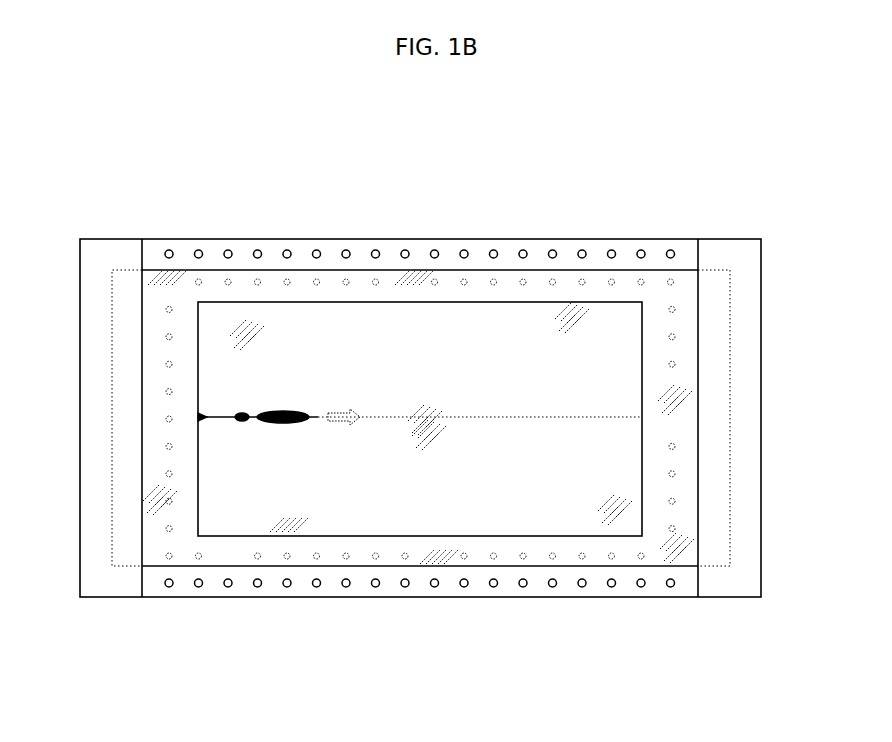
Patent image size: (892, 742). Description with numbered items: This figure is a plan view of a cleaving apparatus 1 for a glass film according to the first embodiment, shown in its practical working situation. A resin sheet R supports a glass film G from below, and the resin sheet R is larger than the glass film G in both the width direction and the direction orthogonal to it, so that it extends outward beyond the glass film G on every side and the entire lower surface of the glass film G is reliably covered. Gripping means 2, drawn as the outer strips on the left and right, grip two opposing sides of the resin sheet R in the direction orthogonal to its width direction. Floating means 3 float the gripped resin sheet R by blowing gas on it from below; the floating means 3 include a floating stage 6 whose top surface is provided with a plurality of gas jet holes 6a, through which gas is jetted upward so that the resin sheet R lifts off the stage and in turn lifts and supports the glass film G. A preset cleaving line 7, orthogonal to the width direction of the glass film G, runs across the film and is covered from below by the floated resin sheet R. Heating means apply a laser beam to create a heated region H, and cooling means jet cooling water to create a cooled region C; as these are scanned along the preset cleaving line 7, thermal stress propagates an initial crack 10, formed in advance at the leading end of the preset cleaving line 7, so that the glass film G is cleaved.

The cleaving apparatus 1 is at (553, 196).
The gripping means 2 is at (118, 246).
The floating means 3 is at (386, 605).
The floating stage 6 is at (622, 251).
The gas jet holes 6a is at (478, 276).
The preset cleaving line 7 is at (485, 418).
The resin sheet R is at (208, 285).
The glass film G is at (300, 315).
The cooled region C is at (242, 412).
The heated region H is at (288, 411).
The initial crack 10 is at (203, 420).